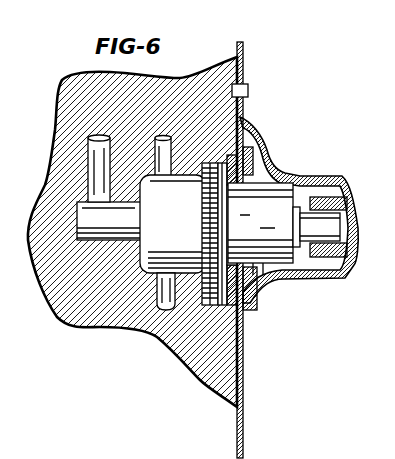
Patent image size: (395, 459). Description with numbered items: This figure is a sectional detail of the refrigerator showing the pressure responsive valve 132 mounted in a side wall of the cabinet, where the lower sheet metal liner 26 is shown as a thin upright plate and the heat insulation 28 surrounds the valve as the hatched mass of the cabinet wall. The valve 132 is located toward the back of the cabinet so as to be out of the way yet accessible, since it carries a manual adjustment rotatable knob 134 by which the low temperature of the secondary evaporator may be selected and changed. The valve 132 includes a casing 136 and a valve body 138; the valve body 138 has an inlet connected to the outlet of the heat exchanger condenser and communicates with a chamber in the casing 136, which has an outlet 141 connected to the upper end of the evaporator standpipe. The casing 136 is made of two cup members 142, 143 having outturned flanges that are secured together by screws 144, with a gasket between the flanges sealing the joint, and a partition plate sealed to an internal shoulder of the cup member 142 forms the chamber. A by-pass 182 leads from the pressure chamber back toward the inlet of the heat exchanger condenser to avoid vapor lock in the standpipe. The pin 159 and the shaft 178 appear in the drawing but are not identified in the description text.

The lower sheet metal liner 26 is at (243, 62).
The heat insulation 28 is at (43, 306).
The pressure responsive valve 132 is at (170, 230).
The manual adjustment rotatable knob 134 is at (345, 276).
The casing 136 is at (137, 263).
The valve body 138 is at (97, 237).
The outlet 141 is at (152, 310).
The cup member 142 is at (200, 160).
The cup member 143 is at (278, 183).
The screws 144 is at (214, 312).
The pin 159 is at (104, 157).
The shaft 178 is at (300, 244).
The by-pass 182 is at (155, 140).